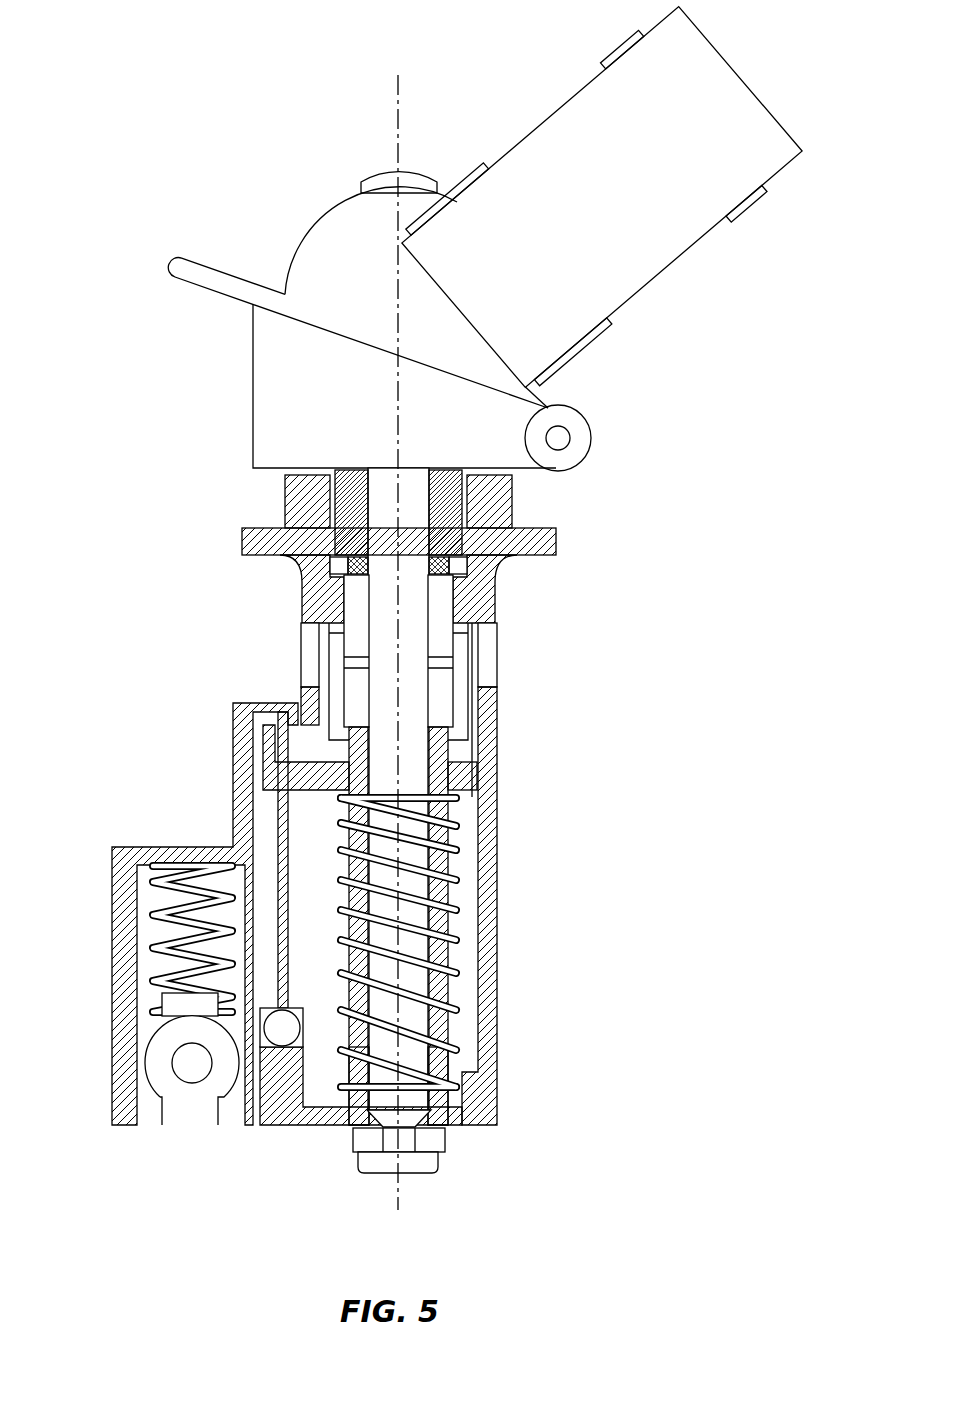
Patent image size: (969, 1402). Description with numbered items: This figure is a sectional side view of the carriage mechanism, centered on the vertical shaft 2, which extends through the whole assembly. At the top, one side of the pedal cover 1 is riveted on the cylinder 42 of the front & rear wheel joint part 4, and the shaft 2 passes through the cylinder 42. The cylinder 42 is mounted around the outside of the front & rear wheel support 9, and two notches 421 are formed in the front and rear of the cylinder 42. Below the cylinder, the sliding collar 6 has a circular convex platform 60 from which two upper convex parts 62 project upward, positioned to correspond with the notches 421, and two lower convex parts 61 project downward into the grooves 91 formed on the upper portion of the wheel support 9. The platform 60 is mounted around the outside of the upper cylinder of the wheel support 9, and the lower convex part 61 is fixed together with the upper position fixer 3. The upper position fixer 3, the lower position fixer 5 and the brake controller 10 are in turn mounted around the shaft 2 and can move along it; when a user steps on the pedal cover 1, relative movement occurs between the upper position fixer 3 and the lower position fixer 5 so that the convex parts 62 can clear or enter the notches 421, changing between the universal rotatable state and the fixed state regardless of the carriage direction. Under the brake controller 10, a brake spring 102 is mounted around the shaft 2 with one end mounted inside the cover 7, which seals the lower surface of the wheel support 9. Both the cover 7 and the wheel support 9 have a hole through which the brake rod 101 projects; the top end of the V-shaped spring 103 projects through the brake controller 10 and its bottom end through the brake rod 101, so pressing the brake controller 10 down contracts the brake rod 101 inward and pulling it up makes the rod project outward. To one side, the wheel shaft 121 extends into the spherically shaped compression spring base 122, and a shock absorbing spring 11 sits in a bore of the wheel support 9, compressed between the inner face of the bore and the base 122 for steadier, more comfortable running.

The pedal cover 1 is at (270, 383).
The vertical shaft 2 is at (375, 172).
The upper position fixer 3 is at (443, 617).
The front & rear wheel joint part 4 is at (752, 103).
The lower position fixer 5 is at (452, 695).
The sliding collar 6 is at (399, 548).
The cover 7 is at (467, 1125).
The front & rear wheel support 9 is at (242, 737).
The brake controller 10 is at (465, 778).
The shock absorbing spring 11 is at (148, 893).
The cylinder 42 is at (312, 247).
The circular convex platform 60 is at (548, 545).
The lower convex parts 61 is at (308, 600).
The upper convex parts 62 is at (293, 510).
The grooves 91 is at (312, 660).
The brake rod 101 is at (282, 1033).
The brake spring 102 is at (452, 1003).
The V-shaped spring 103 is at (278, 805).
The wheel shaft 121 is at (192, 1065).
The compression spring base 122 is at (157, 1050).
The notches 421 is at (345, 476).